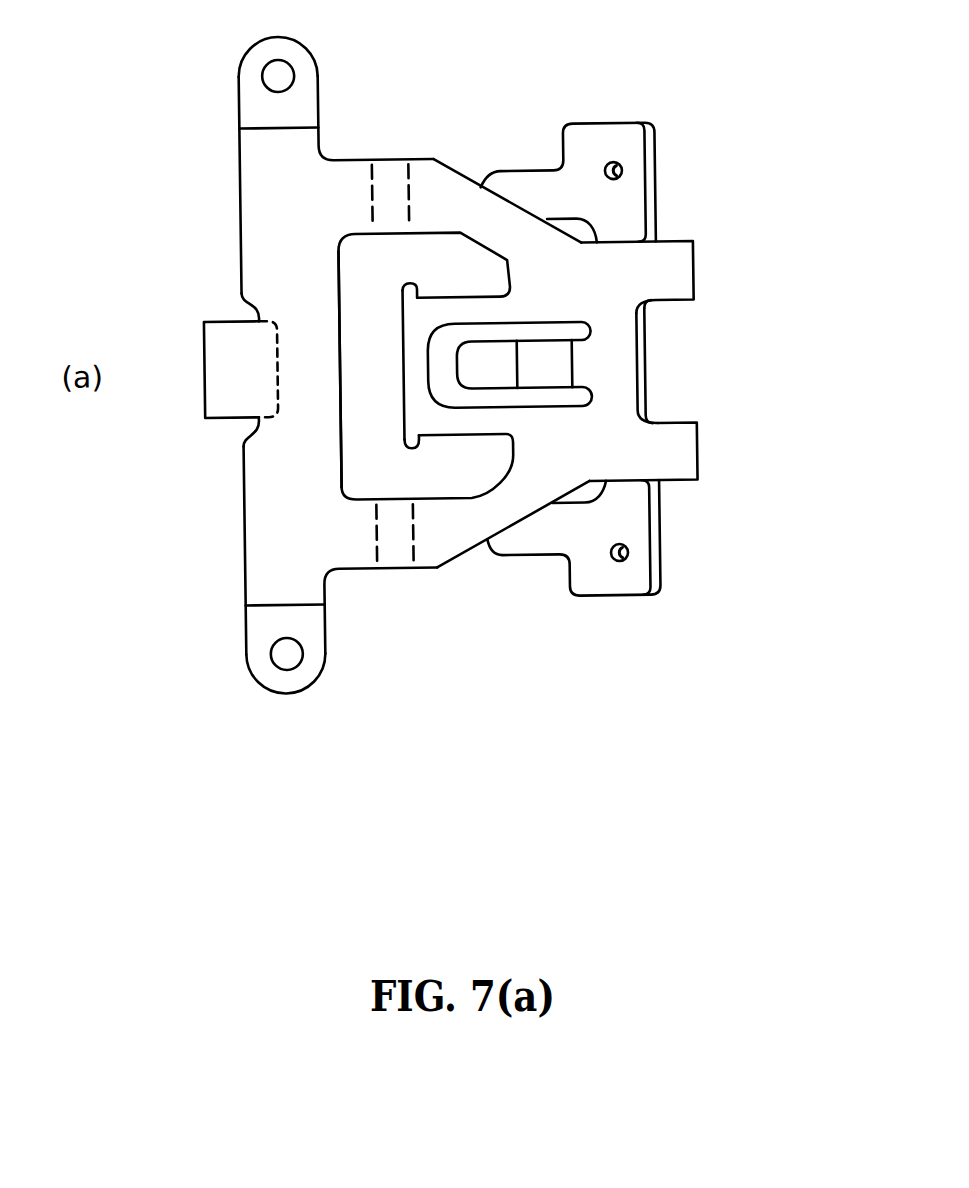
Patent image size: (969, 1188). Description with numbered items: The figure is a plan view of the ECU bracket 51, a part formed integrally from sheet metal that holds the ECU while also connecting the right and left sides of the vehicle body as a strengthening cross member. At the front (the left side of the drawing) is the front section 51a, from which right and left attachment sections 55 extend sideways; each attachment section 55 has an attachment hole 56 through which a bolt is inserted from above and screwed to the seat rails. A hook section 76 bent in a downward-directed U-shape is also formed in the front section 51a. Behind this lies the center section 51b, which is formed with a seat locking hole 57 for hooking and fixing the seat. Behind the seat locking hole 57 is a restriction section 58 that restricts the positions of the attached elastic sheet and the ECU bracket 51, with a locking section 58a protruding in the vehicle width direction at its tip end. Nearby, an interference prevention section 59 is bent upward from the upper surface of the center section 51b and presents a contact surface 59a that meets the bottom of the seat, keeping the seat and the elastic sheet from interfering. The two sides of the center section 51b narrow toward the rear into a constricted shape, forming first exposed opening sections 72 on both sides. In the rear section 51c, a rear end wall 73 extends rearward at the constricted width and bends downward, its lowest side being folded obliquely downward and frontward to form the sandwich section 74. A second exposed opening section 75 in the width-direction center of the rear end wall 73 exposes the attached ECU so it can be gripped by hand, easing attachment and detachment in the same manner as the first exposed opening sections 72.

The ECU bracket 51 is at (483, 351).
The front section 51a is at (281, 515).
The center section 51b is at (466, 561).
The rear section 51c is at (712, 393).
The attachment section 55 is at (304, 97).
The attachment hole 56 is at (287, 76).
The seat locking hole 57 is at (345, 396).
The restriction section 58 is at (334, 280).
The locking section 58a is at (404, 292).
The interference prevention section 59 is at (622, 331).
The contact surface 59a is at (483, 365).
The first exposed opening section 72 is at (617, 360).
The rear end wall 73 is at (696, 268).
The sandwich section 74 is at (630, 578).
The second exposed opening section 75 is at (678, 425).
The hook section 76 is at (214, 363).